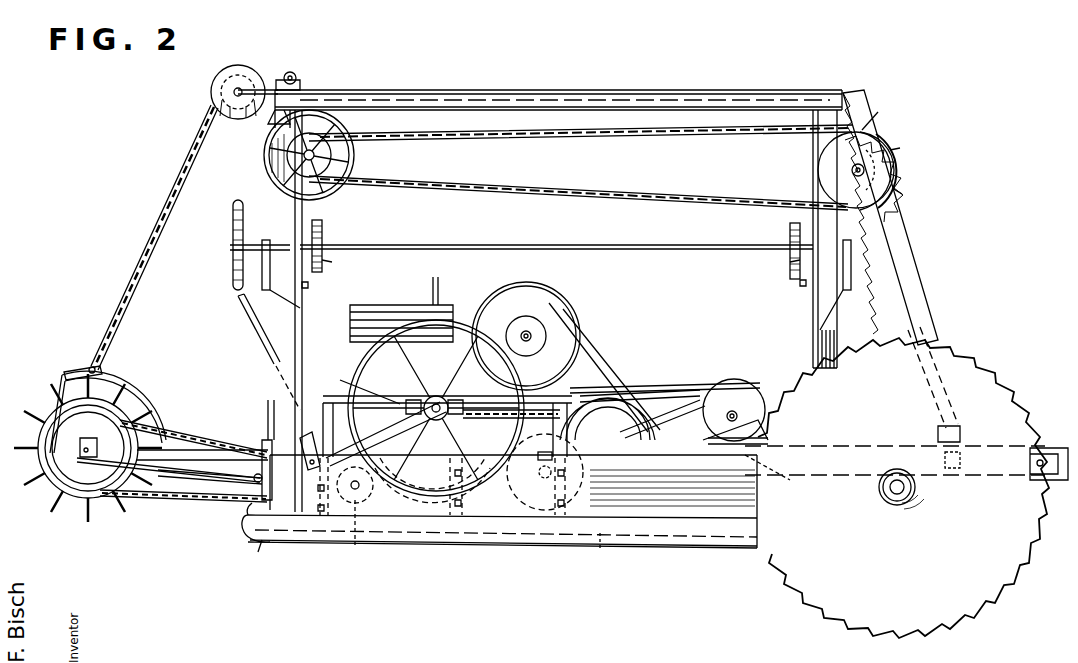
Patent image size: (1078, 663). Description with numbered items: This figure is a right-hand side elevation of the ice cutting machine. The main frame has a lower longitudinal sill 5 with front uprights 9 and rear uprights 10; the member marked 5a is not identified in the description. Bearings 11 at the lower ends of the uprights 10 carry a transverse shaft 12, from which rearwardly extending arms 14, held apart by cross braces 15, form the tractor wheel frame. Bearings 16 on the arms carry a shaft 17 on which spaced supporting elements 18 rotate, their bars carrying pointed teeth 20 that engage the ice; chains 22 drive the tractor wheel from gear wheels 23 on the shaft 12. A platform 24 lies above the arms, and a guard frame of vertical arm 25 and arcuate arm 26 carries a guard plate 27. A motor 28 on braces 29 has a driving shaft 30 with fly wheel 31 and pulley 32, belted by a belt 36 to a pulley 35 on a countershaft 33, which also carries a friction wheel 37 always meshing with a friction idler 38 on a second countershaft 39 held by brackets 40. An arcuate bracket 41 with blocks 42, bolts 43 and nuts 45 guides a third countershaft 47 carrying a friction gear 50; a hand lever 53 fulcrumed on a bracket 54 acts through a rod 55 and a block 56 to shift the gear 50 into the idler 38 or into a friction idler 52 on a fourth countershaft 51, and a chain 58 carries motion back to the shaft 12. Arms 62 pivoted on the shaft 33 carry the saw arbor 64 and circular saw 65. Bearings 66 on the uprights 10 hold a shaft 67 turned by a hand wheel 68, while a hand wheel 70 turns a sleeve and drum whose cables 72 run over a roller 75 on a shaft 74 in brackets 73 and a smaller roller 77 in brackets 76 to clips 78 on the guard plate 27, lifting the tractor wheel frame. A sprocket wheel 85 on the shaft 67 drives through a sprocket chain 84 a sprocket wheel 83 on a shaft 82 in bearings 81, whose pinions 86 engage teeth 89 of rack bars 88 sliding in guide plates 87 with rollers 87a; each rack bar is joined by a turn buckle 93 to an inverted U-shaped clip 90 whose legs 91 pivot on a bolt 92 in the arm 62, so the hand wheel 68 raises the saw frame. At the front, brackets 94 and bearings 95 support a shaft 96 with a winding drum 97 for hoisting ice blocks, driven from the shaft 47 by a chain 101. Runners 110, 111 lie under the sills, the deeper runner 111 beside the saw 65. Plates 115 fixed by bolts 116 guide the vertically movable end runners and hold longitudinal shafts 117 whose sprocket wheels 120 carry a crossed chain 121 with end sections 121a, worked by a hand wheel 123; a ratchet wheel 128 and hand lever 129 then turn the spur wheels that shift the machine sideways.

The lower longitudinal sill 5 is at (440, 513).
The top frame beam 5a is at (478, 106).
The front upright 9 is at (808, 345).
The rear upright 10 is at (302, 345).
The bearing 11 is at (255, 530).
The transverse shaft 12 is at (258, 436).
The arm 14 is at (200, 492).
The cross brace 15 is at (170, 486).
The bearing 16 is at (89, 438).
The shaft 17 is at (76, 462).
The supporting element 18 is at (34, 438).
The pointed tooth 20 is at (84, 505).
The chain 22 is at (202, 432).
The gear wheel 23 is at (254, 488).
The platform 24 is at (238, 440).
The vertical arm 25 is at (62, 402).
The arcuate arm 26 is at (150, 398).
The guard plate 27 is at (162, 418).
The motor 28 is at (404, 302).
The brace 29 is at (600, 378).
The driving shaft 30 is at (546, 331).
The fly wheel 31 is at (581, 333).
The pulley 32 is at (530, 332).
The countershaft 33 is at (598, 490).
The pulley 35 is at (658, 418).
The belt 36 is at (586, 346).
The friction wheel 37 is at (630, 394).
The friction idler 38 is at (520, 458).
The second countershaft 39 is at (539, 483).
The bracket 40 is at (532, 469).
The arcuate bracket 41 is at (500, 422).
The block 42 is at (410, 430).
The bolt 43 is at (458, 398).
The nut 45 is at (410, 398).
The third countershaft 47 is at (440, 450).
The friction gear 50 is at (352, 368).
The fourth countershaft 51 is at (352, 490).
The friction idler 52 is at (364, 532).
The hand lever 53 is at (248, 318).
The bracket 54 is at (306, 436).
The rod 55 is at (385, 488).
The block 56 is at (442, 398).
The chain 58 is at (363, 386).
The arm 62 is at (769, 477).
The saw arbor 64 is at (898, 493).
The circular saw 65 is at (990, 385).
The bearing 66 is at (266, 152).
The transverse shaft 67 is at (300, 165).
The hand wheel 68 is at (272, 172).
The hand wheel 70 is at (345, 110).
The cable 72 is at (170, 172).
The bracket 73 is at (266, 108).
The shaft 74 is at (240, 74).
The roller 75 is at (226, 78).
The bracket 76 is at (288, 80).
The smaller roller 77 is at (296, 72).
The clip 78 is at (86, 362).
The bearing 81 is at (836, 182).
The shaft 82 is at (862, 166).
The sprocket wheel 83 is at (898, 165).
The sprocket chain 84 is at (522, 198).
The sprocket wheel 85 is at (332, 157).
The pinion 86 is at (876, 114).
The guide plate 87 is at (900, 150).
The roller 87a is at (922, 200).
The rack bar 88 is at (850, 92).
The teeth 89 is at (890, 292).
The inverted U-shaped clip 90 is at (960, 438).
The leg 91 is at (968, 460).
The bolt 92 is at (942, 462).
The turn buckle 93 is at (958, 432).
The bracket 94 is at (758, 430).
The bearing 95 is at (737, 414).
The transverse shaft 96 is at (738, 400).
The winding drum 97 is at (712, 380).
The chain 101 is at (718, 376).
The runner 110 is at (602, 550).
The runner 111 is at (657, 547).
The plate 115 is at (568, 311).
The transverse bolt 116 is at (860, 248).
The longitudinal shaft 117 is at (458, 242).
The sprocket wheel 120 is at (780, 226).
The crossed chain 121 is at (786, 280).
The end section 121a is at (792, 308).
The hand wheel 123 is at (233, 282).
The ratchet wheel 128 is at (267, 552).
The hand lever 129 is at (268, 396).